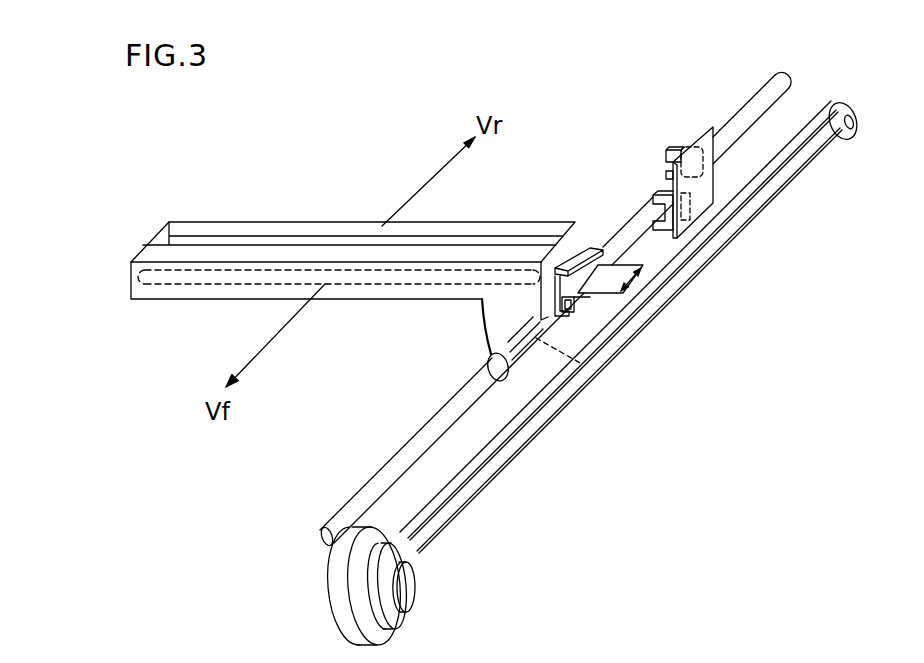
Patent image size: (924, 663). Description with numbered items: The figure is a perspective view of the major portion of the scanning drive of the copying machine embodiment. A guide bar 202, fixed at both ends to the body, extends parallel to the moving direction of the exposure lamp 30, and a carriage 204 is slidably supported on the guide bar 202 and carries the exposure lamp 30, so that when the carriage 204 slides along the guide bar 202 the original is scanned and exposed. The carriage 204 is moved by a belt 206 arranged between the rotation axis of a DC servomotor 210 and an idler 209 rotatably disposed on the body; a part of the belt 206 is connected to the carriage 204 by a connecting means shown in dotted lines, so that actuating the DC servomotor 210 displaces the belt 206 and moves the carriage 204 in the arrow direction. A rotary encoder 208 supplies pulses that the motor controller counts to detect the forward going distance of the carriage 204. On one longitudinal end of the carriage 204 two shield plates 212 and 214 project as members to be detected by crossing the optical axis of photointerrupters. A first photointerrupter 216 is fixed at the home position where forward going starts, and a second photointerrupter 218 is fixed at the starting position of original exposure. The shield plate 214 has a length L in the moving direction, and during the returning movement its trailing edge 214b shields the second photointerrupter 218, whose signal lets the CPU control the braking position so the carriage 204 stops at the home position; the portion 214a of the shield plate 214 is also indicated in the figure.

The exposure lamp 30 is at (176, 284).
The guide bar 202 is at (420, 433).
The carriage 204 is at (417, 299).
The belt 206 is at (477, 509).
The rotary encoder 208 is at (413, 588).
The idler 209 is at (850, 112).
The DC servomotor 210 is at (345, 594).
The shield plate 212 is at (586, 250).
The shield plate 214 is at (566, 296).
The bracket inner part 214a is at (575, 306).
The trailing edge 214b is at (599, 262).
The first photointerrupter 216 is at (676, 147).
The second photointerrupter 218 is at (655, 193).